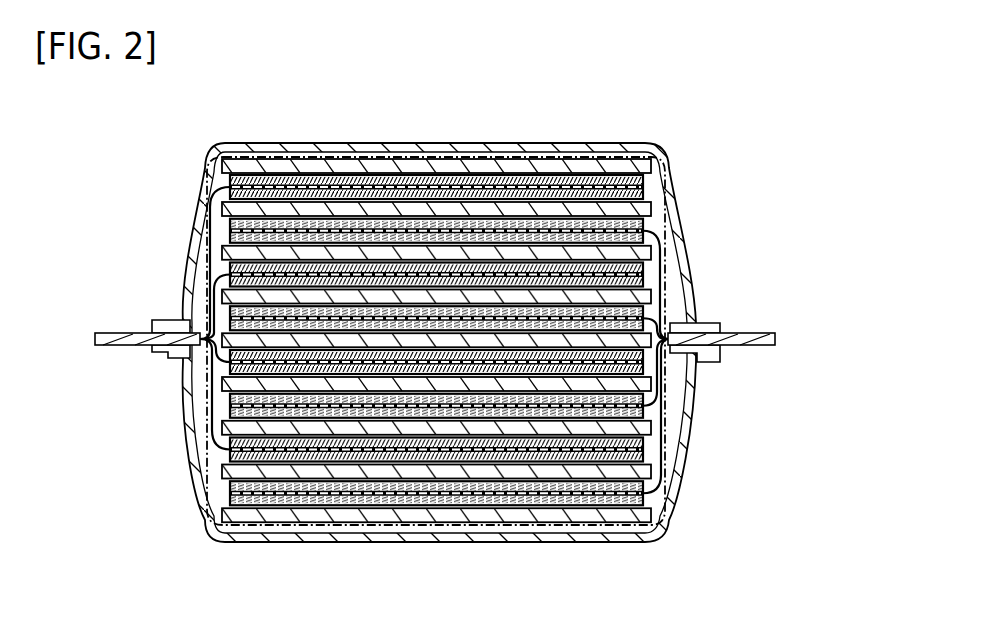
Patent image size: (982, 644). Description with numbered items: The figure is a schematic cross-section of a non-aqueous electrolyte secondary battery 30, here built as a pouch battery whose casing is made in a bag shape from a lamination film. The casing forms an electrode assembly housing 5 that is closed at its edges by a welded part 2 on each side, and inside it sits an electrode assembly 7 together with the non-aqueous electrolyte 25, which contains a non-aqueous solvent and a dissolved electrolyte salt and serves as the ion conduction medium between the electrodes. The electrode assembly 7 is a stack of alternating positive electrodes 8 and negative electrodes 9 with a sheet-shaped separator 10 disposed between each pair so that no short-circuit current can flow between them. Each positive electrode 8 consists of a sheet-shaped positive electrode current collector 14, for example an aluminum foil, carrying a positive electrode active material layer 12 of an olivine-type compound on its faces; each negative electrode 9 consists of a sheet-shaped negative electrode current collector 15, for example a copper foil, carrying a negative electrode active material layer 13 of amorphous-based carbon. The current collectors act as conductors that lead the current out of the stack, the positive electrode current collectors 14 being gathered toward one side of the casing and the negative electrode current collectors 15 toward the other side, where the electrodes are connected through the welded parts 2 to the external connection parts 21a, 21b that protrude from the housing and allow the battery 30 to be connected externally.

The welded part 2 is at (165, 321).
The electrode assembly housing 5 is at (420, 148).
The electrode assembly 7 is at (413, 527).
The positive electrode 8 is at (490, 355).
The negative electrode 9 is at (383, 347).
The separator 10 is at (267, 166).
The positive electrode active material layer 12 is at (648, 223).
The negative electrode active material layer 13 is at (508, 193).
The positive electrode current collector 14 is at (648, 231).
The negative electrode current collector 15 is at (533, 186).
The external connection part 21a is at (766, 348).
The external connection part 21b is at (105, 347).
The non-aqueous electrolyte 25 is at (226, 489).
The non-aqueous electrolyte secondary battery 30 is at (473, 347).